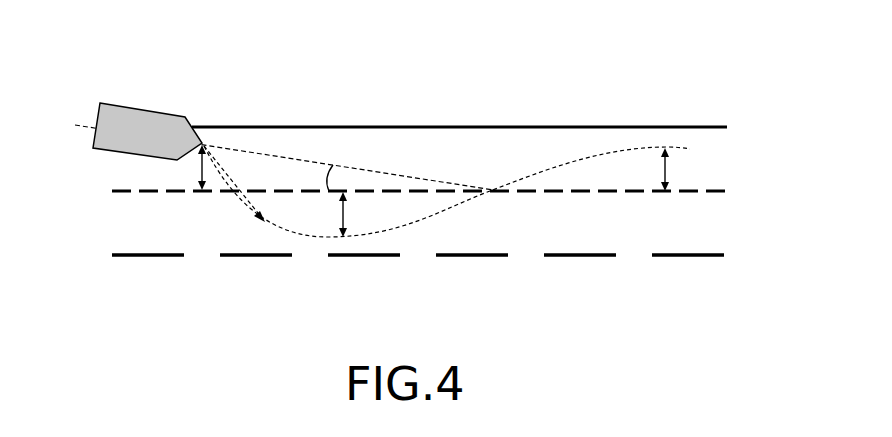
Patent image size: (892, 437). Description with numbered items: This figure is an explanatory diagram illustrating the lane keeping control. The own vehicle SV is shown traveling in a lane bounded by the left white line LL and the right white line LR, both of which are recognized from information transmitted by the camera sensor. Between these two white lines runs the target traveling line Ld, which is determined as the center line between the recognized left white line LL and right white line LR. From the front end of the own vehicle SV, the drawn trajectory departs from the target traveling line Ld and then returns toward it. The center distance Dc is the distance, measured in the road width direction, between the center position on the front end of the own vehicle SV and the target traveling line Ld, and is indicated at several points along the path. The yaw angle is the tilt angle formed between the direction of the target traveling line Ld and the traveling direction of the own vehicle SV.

The own vehicle SV is at (140, 103).
The left white line LL is at (697, 125).
The target traveling line Ld is at (698, 189).
The right white line LR is at (672, 257).
The center distance Dc is at (198, 170).